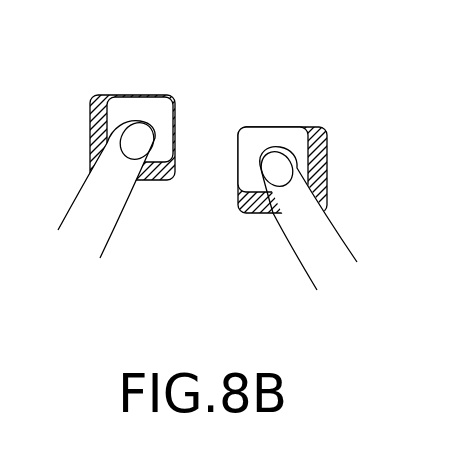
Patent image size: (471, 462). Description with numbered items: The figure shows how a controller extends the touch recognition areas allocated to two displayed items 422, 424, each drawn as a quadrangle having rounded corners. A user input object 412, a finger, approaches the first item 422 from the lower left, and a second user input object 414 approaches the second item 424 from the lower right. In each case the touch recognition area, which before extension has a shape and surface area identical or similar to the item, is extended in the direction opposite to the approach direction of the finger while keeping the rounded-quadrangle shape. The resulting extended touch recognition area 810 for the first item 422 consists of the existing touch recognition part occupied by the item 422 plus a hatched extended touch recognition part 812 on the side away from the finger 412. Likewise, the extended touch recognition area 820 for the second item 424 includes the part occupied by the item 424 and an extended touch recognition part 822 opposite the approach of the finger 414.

The extended touch recognition area 810 is at (125, 110).
The extended touch recognition part 812 is at (92, 135).
The item 422 is at (92, 98).
The user input object 412 is at (107, 222).
The extended touch recognition area 820 is at (286, 140).
The extended touch recognition part 822 is at (320, 167).
The item 424 is at (272, 127).
The user input object 414 is at (305, 252).